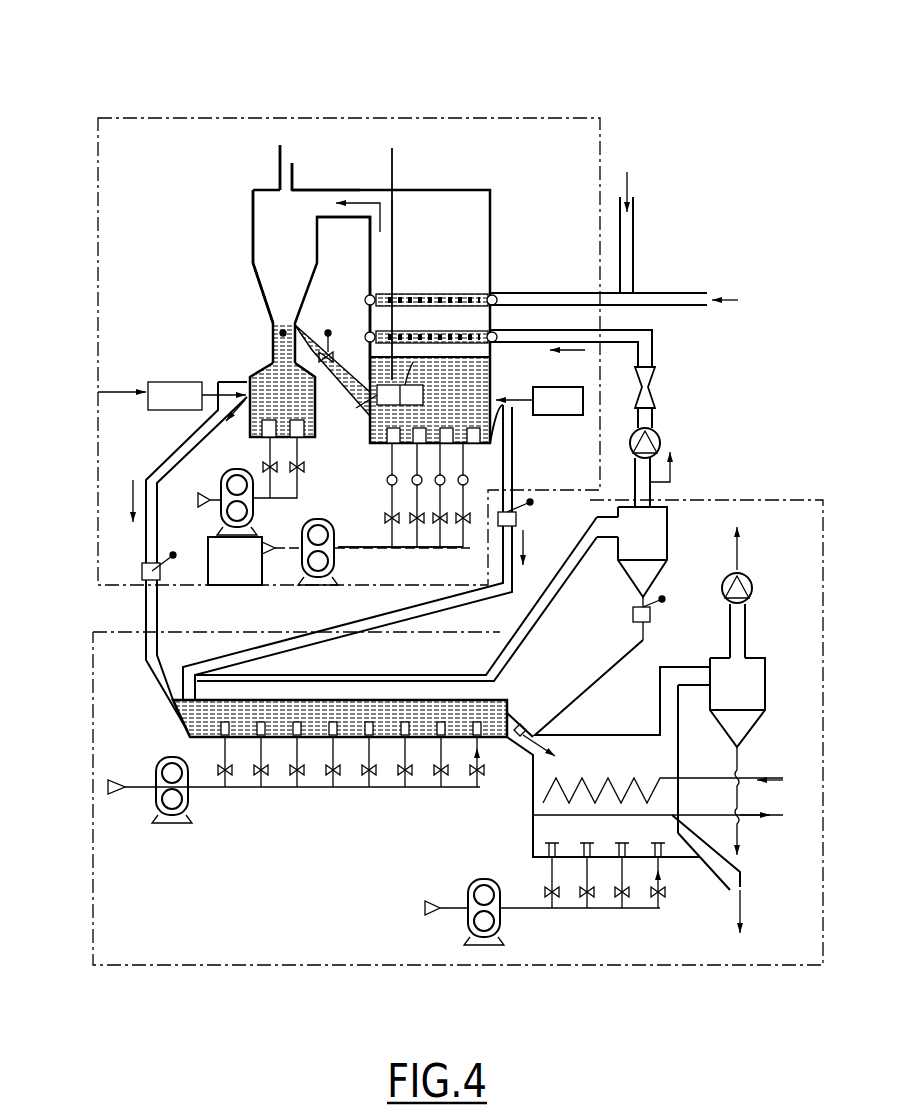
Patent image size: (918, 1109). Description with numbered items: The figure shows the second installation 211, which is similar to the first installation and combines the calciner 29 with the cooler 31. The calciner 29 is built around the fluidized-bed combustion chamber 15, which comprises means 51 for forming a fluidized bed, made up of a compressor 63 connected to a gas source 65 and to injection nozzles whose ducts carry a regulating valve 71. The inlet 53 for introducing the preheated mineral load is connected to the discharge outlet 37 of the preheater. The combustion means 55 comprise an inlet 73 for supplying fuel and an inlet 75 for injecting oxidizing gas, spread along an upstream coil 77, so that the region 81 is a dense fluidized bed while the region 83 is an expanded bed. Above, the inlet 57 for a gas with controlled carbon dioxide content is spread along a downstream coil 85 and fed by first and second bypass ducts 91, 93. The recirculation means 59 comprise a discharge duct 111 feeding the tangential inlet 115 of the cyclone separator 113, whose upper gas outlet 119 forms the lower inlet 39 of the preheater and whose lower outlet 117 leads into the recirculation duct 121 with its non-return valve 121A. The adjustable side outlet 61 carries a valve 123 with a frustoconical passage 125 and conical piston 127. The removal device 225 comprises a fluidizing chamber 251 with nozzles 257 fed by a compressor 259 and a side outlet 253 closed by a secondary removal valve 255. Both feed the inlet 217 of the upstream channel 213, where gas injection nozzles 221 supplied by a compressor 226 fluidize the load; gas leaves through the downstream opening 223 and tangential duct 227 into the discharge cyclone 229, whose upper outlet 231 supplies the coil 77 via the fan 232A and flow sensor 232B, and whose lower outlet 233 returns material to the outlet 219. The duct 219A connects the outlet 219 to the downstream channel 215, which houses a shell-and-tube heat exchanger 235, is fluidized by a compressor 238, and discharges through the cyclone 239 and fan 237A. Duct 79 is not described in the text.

The calciner 29 is at (114, 114).
The cooler 31 is at (830, 498).
The second installation 211 is at (723, 210).
The fluidized-bed combustion chamber 15 is at (506, 182).
The lower inlet for introducing gases into the preheater 39 is at (280, 160).
The upper outlet for discharging the gas 119 is at (280, 185).
The duct for discharging the material and the gas 111 is at (317, 202).
The discharge outlet of the preheater 37 is at (392, 165).
The cyclone separator 113 is at (253, 228).
The tangential inlet 115 is at (302, 212).
The means for recirculating the calcined mineral load 59 is at (190, 222).
The region of expanded fluidized bed 83 is at (450, 226).
The downstream coil 85 is at (398, 296).
The inlet for introducing a treatment gas having a controlled carbon dioxide content 57 is at (506, 287).
The first bypass duct 91 is at (633, 222).
The second bypass duct 93 is at (665, 292).
The upstream coil 77 is at (490, 335).
The inlet for injecting an oxidizing gas for combustion 75 is at (632, 328).
The return line 79 is at (652, 352).
The sensor for measuring the flow rate 232B is at (655, 387).
The fan 232A is at (658, 437).
The combustion means 55 is at (502, 373).
The region of dense fluidized bed 81 is at (416, 385).
The inlet for supplying fuel 73 is at (332, 370).
The recirculation duct 121 is at (320, 350).
The lower outlet for discharging the material 117 is at (280, 333).
The non-return valve 121A is at (273, 372).
The fluidizing chamber 251 is at (318, 437).
The inlet for introducing the preheated mineral load 53 is at (340, 417).
The secondary removal valve 255 is at (176, 380).
The removal device 225 is at (84, 373).
The side outlet for removing material 253 is at (185, 430).
The nozzles for injecting compressed air 257 is at (231, 492).
The compressor 259 is at (215, 520).
The gas source 65 is at (224, 571).
The compressor 63 is at (303, 580).
The means for forming a fluidized bed 51 is at (377, 515).
The frustoconical flow passage 125 is at (468, 480).
The regulating valve 71 is at (417, 527).
The adjustable side outlet for removing the calcined mineral load 61 is at (519, 431).
The valve for controlling the amount of mineral load removed 123 is at (548, 421).
The movable conical piston 127 is at (533, 392).
The upper outlet of the cyclone 231 is at (652, 480).
The discharge cyclone 229 is at (668, 533).
The tangential duct 227 is at (605, 527).
The downstream opening for discharging the gas 223 is at (541, 622).
The upstream fluidized bed channel 213 is at (360, 678).
The lower material outlet of the cyclone 233 is at (640, 640).
The downstream fluidized bed channel 215 is at (606, 732).
The outlet for discharging the material 219 is at (520, 708).
The duct 219A is at (518, 748).
The inlet for introducing the material 217 is at (178, 718).
The gas injection nozzles 221 is at (280, 775).
The compressor 226 is at (172, 824).
The compressor 238 is at (484, 946).
The fan 237A is at (752, 588).
The discharge cyclone of the second channel 239 is at (752, 685).
The shell-and-tube heat exchanger 235 is at (690, 852).